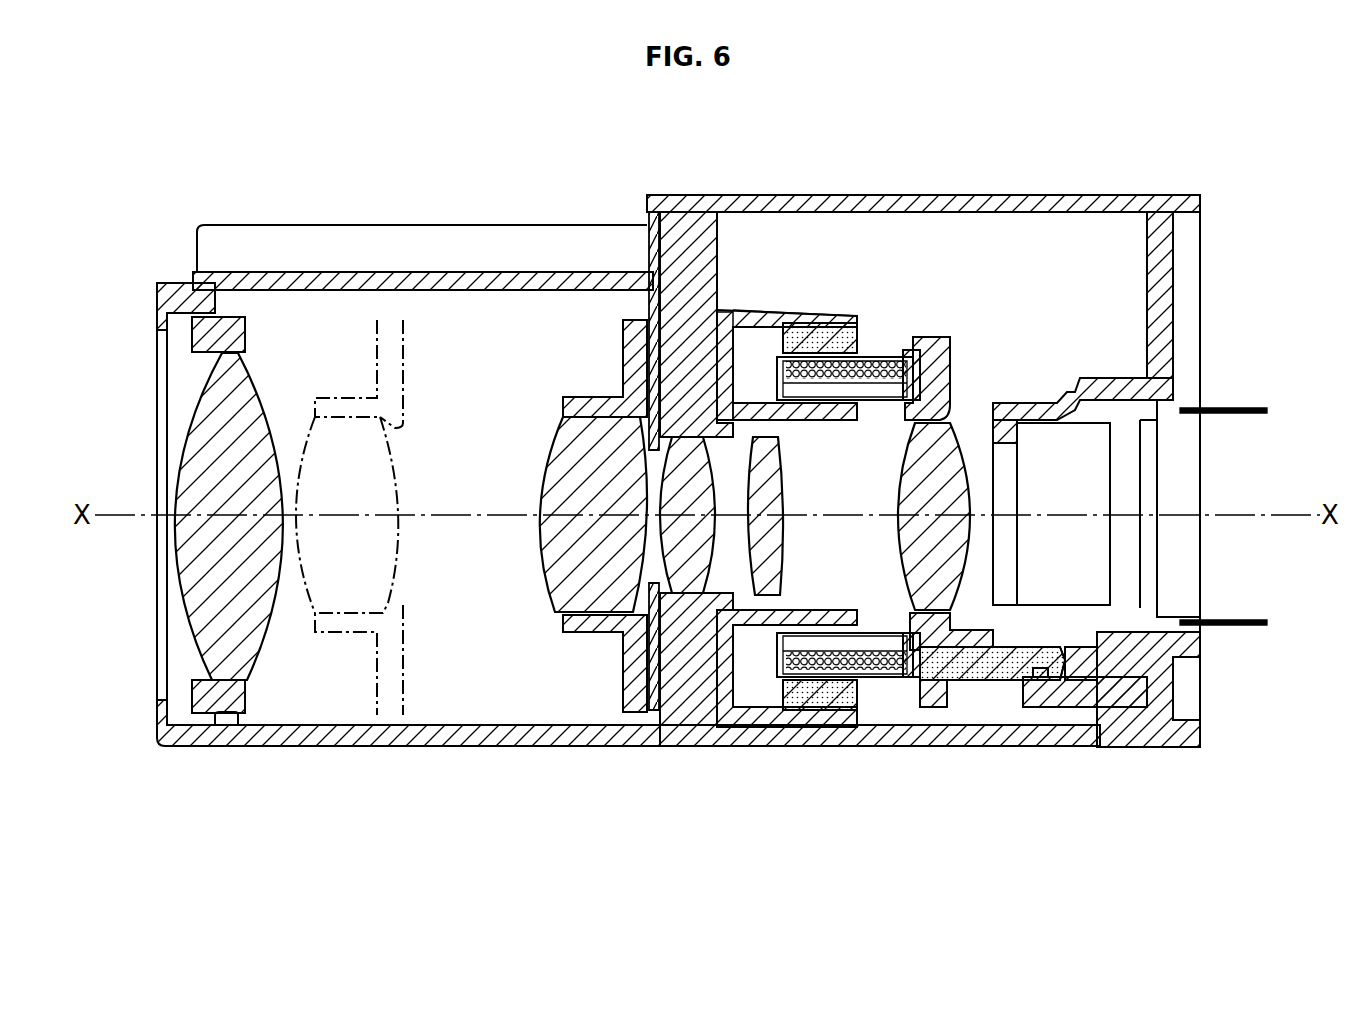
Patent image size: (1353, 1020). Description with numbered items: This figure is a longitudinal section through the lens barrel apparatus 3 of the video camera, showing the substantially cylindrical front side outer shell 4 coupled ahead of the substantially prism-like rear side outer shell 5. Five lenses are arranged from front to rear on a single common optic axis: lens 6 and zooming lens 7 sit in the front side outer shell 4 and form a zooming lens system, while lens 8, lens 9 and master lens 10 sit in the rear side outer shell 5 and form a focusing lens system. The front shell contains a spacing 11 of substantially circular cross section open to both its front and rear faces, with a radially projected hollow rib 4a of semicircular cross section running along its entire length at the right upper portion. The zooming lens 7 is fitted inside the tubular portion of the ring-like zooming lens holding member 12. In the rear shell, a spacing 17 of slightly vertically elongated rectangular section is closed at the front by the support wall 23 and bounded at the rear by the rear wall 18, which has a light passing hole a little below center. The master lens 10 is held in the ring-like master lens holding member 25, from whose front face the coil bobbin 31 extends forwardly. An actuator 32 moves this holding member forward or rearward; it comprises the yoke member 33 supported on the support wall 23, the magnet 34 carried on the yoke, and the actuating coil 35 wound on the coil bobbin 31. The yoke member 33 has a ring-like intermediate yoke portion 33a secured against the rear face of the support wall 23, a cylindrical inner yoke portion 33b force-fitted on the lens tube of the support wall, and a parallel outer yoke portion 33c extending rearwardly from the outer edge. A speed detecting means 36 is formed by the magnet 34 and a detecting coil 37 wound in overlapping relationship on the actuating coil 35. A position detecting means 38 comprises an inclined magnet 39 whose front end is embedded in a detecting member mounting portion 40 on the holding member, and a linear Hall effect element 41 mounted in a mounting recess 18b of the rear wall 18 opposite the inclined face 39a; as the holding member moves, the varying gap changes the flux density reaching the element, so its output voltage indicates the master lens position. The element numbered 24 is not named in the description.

The lens barrel apparatus 3 is at (998, 160).
The front side outer shell 4 is at (445, 280).
The hollow rib 4a is at (376, 242).
The rear side outer shell 5 is at (1068, 195).
The lens 6 is at (205, 432).
The zooming lens 7 is at (383, 578).
The lens 8 is at (700, 566).
The lens 9 is at (770, 570).
The master lens 10 is at (915, 545).
The spacing 11 is at (455, 492).
The zooming lens holding member 12 is at (625, 380).
The spacing 17 is at (845, 504).
The rear wall 18 is at (1183, 325).
The mounting recess 18b is at (1120, 707).
The support wall 23 is at (715, 225).
The plate 24 is at (565, 587).
The master lens holding member 25 is at (942, 362).
The coil bobbin 31 is at (912, 365).
The actuator 32 is at (870, 456).
The yoke member 33 is at (787, 347).
The intermediate yoke portion 33a is at (725, 347).
The inner yoke portion 33b is at (808, 422).
The yoke portion 33c is at (772, 312).
The magnet 34 is at (866, 350).
The actuating coil 35 is at (882, 360).
The speed detecting means 36 is at (815, 735).
The detecting coil 37 is at (897, 680).
The position detecting means 38 is at (1015, 714).
The inclined magnet 39 is at (1015, 700).
The inclined face 39a is at (1063, 668).
The detecting member mounting portion 40 is at (932, 707).
The Hall effect element 41 is at (1035, 680).